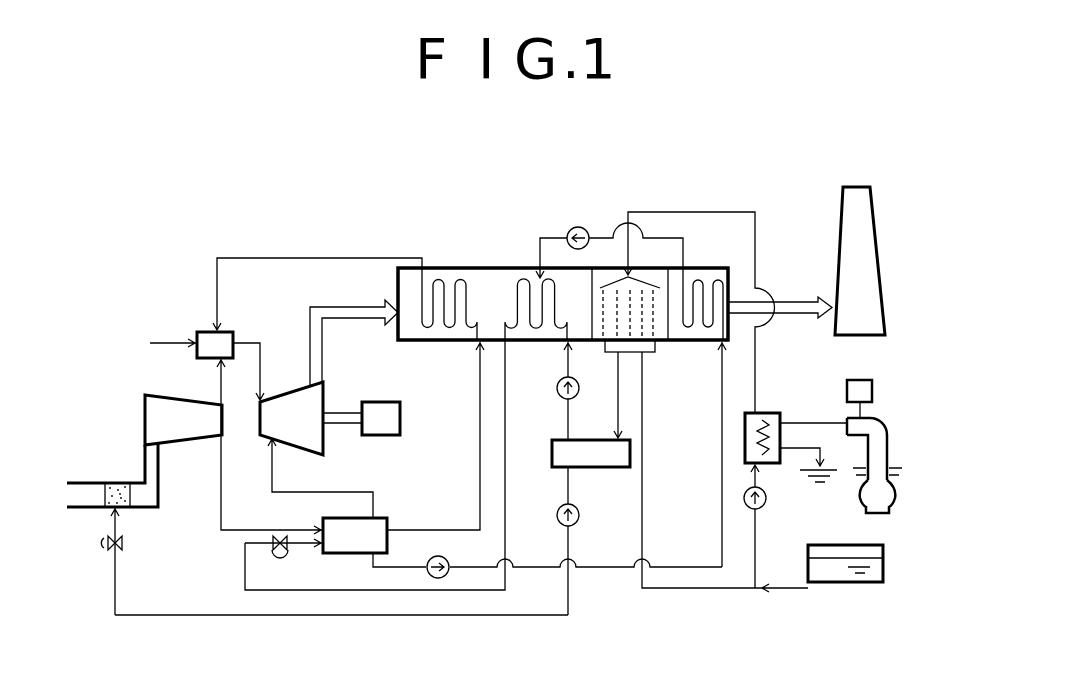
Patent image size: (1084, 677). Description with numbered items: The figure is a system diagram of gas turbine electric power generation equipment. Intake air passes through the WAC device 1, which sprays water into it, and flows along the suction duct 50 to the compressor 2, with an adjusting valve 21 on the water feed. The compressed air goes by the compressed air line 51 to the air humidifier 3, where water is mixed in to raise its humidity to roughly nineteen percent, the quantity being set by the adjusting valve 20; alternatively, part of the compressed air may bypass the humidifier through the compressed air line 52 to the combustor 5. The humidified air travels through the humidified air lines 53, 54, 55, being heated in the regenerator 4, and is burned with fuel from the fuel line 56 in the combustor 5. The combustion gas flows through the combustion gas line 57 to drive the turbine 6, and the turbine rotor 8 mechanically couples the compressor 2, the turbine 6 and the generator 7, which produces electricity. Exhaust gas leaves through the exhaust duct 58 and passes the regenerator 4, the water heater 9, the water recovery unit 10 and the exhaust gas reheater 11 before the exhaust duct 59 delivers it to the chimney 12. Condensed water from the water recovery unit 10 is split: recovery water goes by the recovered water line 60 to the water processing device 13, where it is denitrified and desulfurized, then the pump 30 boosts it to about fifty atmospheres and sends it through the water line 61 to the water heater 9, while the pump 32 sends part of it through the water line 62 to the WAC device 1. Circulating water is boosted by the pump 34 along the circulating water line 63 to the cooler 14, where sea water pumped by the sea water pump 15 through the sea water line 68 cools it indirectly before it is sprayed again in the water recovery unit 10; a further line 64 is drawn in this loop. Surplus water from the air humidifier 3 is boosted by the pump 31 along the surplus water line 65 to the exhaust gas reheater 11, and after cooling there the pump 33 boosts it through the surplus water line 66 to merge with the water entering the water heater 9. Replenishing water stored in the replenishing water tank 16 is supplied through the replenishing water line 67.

The WAC device 1 is at (115, 481).
The compressor 2 is at (183, 420).
The air humidifier 3 is at (355, 536).
The regenerator 4 is at (445, 341).
The combustor 5 is at (215, 345).
The turbine 6 is at (291, 418).
The generator 7 is at (381, 418).
The turbine rotor 8 is at (340, 425).
The water heater 9 is at (518, 275).
The water recovery unit 10 is at (655, 348).
The exhaust gas reheater 11 is at (705, 266).
The chimney 12 is at (860, 261).
The water processing device 13 is at (591, 454).
The cooler 14 is at (765, 410).
The sea water pump 15 is at (889, 446).
The replenishing water tank 16 is at (872, 568).
The adjusting valve 20 is at (283, 565).
The adjusting valve 21 is at (90, 561).
The pump 30 is at (547, 391).
The pump 31 is at (547, 554).
The pump 32 is at (547, 541).
The pump 33 is at (609, 236).
The pump 34 is at (777, 526).
The suction duct 50 is at (148, 509).
The compressed air line 51 is at (219, 475).
The compressed air line 52 is at (219, 388).
The humidified air line 53 is at (432, 527).
The humidified air line 54 is at (375, 498).
The humidified air line 55 is at (322, 257).
The fuel line 56 is at (168, 343).
The combustion gas line 57 is at (252, 342).
The exhaust duct 58 is at (352, 307).
The exhaust duct 59 is at (793, 302).
The recovered water line 60 is at (617, 383).
The water line 61 is at (506, 445).
The water line 62 is at (570, 600).
The circulating water line 63 is at (643, 465).
The cooling water line 64 is at (712, 212).
The surplus water line 65 is at (721, 515).
The surplus water line 66 is at (628, 213).
The replenishing water line 67 is at (785, 588).
The sea water line 68 is at (815, 423).